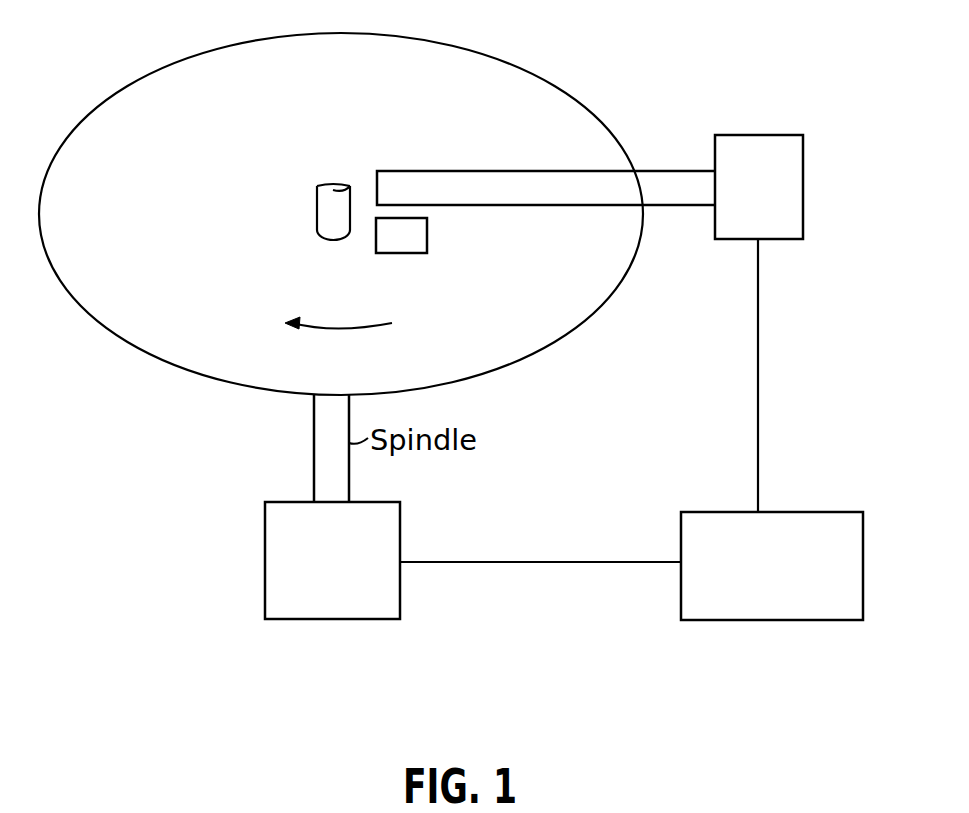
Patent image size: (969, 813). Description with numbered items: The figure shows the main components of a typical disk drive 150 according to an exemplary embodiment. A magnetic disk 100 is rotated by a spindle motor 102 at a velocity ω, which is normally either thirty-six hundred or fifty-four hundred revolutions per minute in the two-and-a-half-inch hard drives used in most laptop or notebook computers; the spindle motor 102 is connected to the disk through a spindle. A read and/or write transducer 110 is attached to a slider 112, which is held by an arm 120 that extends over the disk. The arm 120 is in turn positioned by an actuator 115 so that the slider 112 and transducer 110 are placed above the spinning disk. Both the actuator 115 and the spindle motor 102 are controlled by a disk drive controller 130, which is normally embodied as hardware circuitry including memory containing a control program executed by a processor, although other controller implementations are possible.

The magnetic disk 100 is at (450, 60).
The spindle motor 102 is at (401, 533).
The transducer 110 is at (464, 274).
The slider 112 is at (420, 232).
The actuator 115 is at (822, 120).
The arm 120 is at (440, 175).
The disk drive controller 130 is at (783, 620).
The disk drive 150 is at (667, 80).